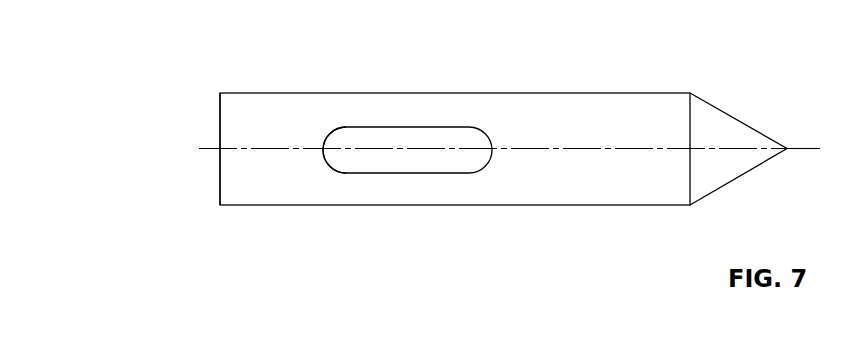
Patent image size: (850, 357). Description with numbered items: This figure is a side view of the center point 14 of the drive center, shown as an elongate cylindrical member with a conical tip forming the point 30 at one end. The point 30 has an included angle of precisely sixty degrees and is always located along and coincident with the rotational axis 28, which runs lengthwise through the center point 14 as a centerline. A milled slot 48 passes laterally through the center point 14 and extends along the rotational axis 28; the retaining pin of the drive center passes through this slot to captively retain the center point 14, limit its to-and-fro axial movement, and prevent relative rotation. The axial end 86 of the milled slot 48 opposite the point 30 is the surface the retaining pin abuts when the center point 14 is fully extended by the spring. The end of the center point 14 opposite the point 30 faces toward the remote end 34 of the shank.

The center point 14 is at (533, 85).
The rotational axis 28 is at (806, 150).
The point 30 is at (786, 148).
The remote end 34 is at (220, 122).
The milled slot 48 is at (390, 137).
The axial end 86 is at (323, 147).